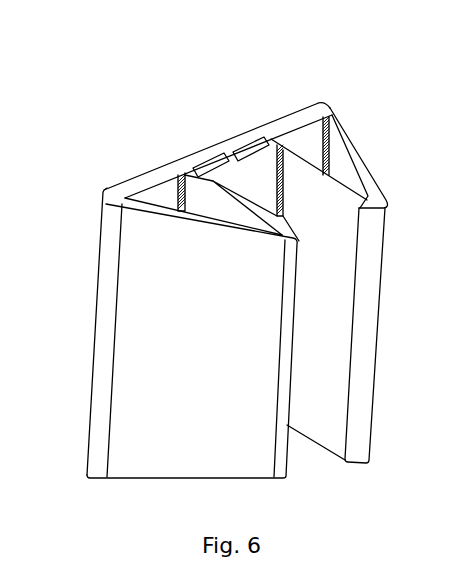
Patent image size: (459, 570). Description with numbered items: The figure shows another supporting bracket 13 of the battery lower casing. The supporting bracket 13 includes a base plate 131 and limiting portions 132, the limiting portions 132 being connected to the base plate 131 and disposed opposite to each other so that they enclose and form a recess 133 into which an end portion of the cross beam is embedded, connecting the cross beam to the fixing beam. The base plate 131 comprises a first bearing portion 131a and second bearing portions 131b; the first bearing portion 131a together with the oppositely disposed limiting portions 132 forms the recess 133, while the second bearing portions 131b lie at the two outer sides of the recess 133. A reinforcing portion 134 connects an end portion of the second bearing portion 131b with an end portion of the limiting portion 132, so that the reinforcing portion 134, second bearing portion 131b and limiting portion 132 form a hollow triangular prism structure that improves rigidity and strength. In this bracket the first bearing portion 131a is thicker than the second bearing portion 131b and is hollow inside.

The supporting bracket 13 is at (251, 36).
The base plate 131 is at (78, 311).
The first bearing portion 131a is at (221, 152).
The second bearing portion 131b is at (303, 115).
The limiting portion 132 is at (282, 199).
The recess 133 is at (298, 443).
The reinforcing portion 134 is at (360, 152).